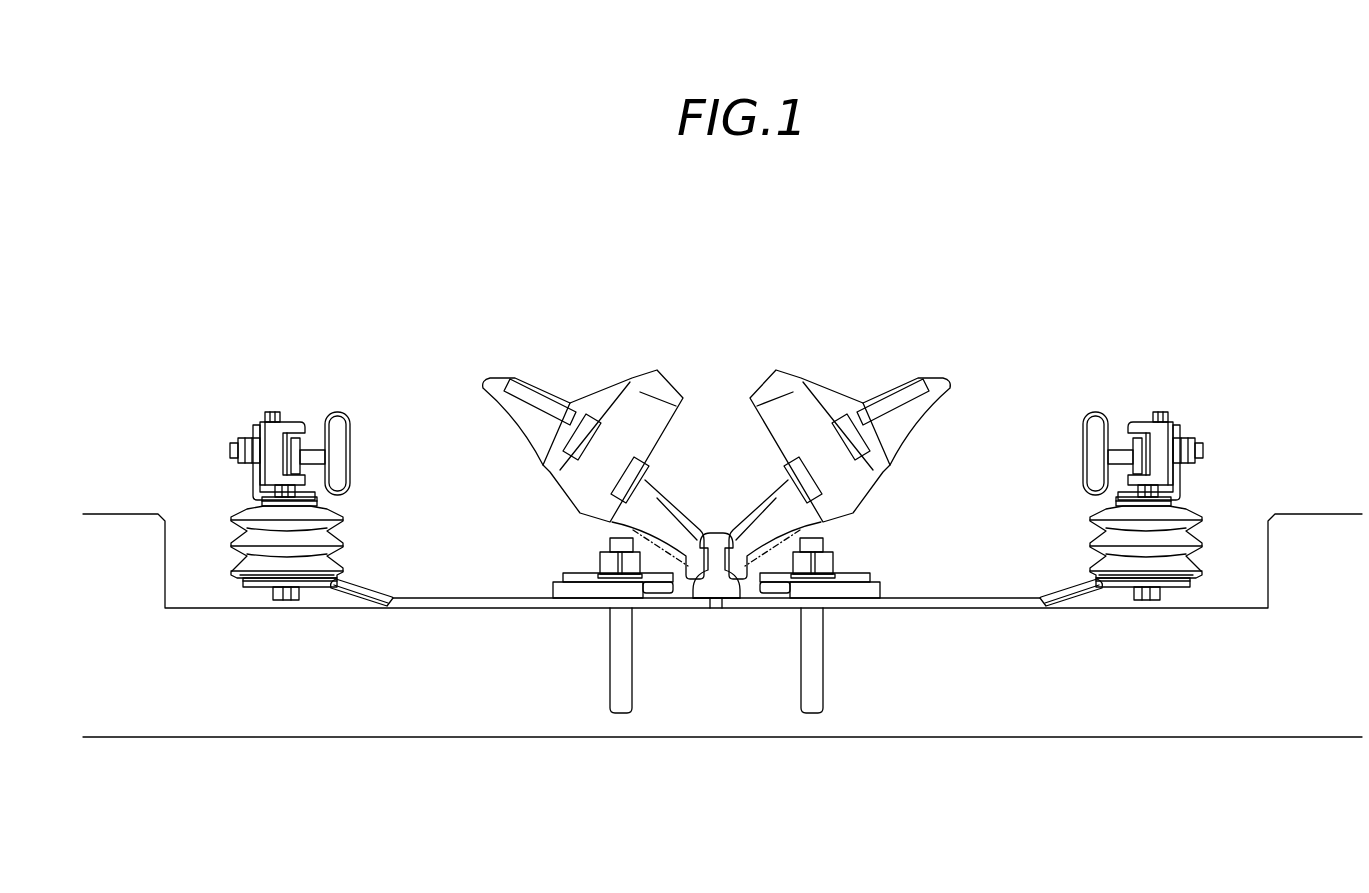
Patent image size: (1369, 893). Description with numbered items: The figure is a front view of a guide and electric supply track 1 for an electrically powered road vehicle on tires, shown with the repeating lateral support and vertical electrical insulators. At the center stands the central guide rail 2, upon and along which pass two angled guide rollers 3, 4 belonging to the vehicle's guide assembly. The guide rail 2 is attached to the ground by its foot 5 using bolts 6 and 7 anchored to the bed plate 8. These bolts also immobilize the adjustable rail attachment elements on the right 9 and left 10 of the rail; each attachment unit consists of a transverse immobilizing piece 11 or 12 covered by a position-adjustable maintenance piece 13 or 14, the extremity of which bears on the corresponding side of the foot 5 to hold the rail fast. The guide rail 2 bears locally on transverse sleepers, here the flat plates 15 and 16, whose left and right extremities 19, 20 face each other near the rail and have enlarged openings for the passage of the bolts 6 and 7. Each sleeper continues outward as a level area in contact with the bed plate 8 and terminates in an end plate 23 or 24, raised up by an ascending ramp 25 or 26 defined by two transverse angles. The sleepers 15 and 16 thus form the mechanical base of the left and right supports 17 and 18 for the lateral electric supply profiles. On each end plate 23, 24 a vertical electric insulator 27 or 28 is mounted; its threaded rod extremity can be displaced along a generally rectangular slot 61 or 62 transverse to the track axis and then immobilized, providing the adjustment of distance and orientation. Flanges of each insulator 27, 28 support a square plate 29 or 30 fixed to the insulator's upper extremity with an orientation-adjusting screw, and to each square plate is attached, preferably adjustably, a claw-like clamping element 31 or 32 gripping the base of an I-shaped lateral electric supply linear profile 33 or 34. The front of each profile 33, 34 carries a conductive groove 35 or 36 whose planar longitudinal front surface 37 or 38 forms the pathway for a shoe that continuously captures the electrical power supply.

The guide and electric supply track 1 is at (1034, 274).
The central guide rail 2 is at (717, 524).
The angled guide roller 3 is at (598, 394).
The angled guide roller 4 is at (833, 394).
The foot 5 is at (716, 606).
The bolt 6 is at (618, 686).
The bolt 7 is at (815, 688).
The bed plate 8 is at (405, 695).
The right rail attachment element 9 is at (552, 561).
The left rail attachment element 10 is at (879, 562).
The transverse immobilizing piece 11 is at (553, 597).
The transverse immobilizing piece 12 is at (880, 600).
The maintenance piece 13 is at (557, 578).
The maintenance piece 14 is at (865, 590).
The sleeper plate 15 is at (521, 612).
The sleeper plate 16 is at (955, 612).
The left support 17 is at (204, 465).
The right support 18 is at (1231, 464).
The left extremity 19 is at (690, 600).
The right extremity 20 is at (742, 600).
The end plate 23 is at (265, 590).
The end plate 24 is at (1170, 590).
The ascending ramp 25 is at (357, 604).
The ascending ramp 26 is at (1076, 604).
The vertical electric insulator 27 is at (209, 540).
The vertical electric insulator 28 is at (1223, 538).
The square plate 29 is at (257, 425).
The square plate 30 is at (1178, 425).
The clamping element 31 is at (297, 411).
The clamping element 32 is at (1135, 411).
The lateral electric supply linear profile 33 is at (340, 425).
The lateral electric supply linear profile 34 is at (1093, 425).
The conductive groove 35 is at (350, 445).
The conductive groove 36 is at (1083, 445).
The planar longitudinal front surface 37 is at (353, 460).
The planar longitudinal front surface 38 is at (1079, 460).
The slot 61 is at (367, 590).
The slot 62 is at (1066, 590).